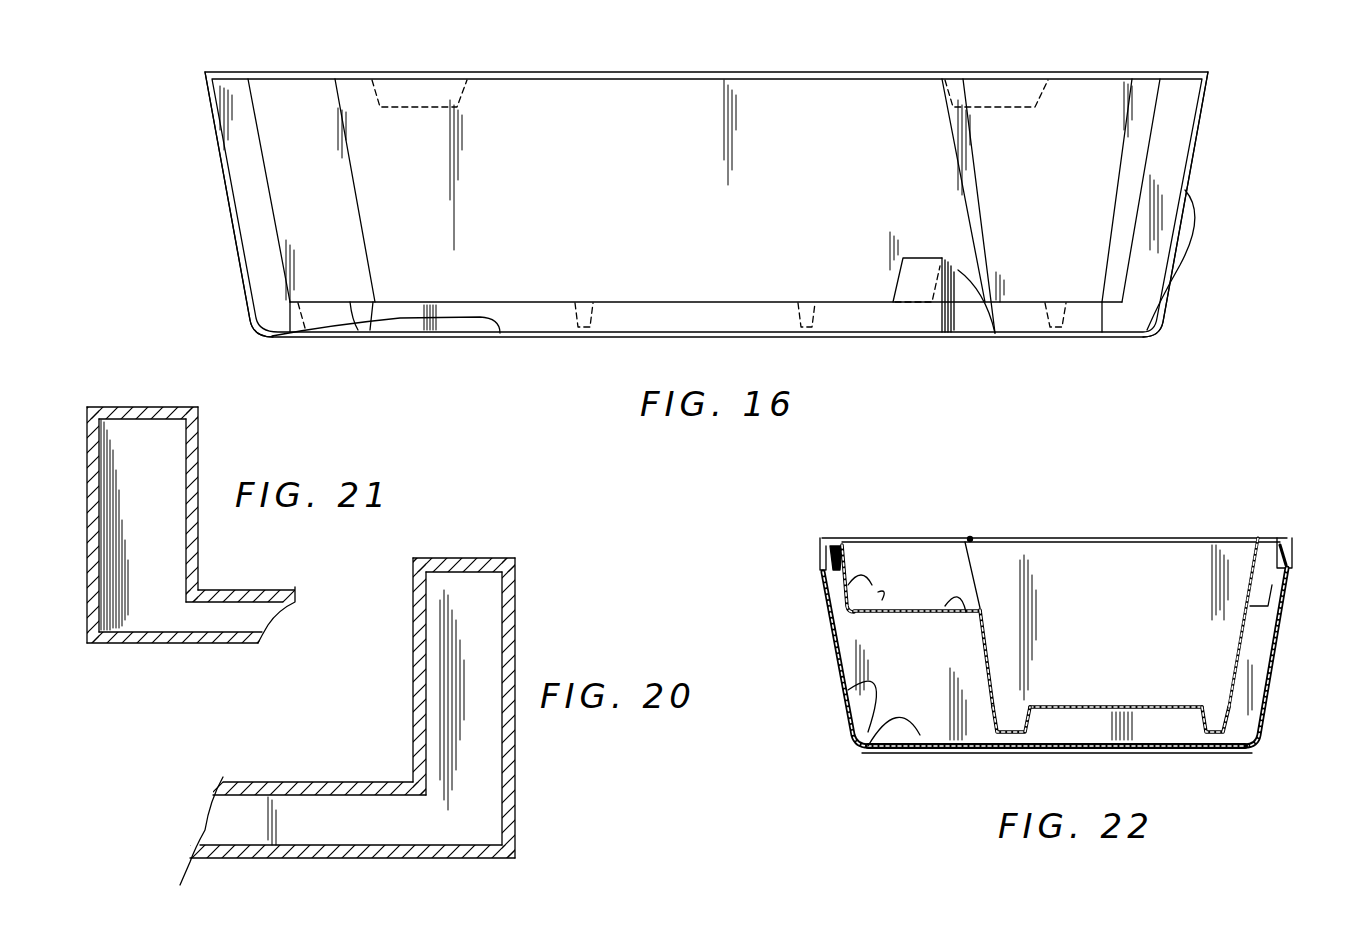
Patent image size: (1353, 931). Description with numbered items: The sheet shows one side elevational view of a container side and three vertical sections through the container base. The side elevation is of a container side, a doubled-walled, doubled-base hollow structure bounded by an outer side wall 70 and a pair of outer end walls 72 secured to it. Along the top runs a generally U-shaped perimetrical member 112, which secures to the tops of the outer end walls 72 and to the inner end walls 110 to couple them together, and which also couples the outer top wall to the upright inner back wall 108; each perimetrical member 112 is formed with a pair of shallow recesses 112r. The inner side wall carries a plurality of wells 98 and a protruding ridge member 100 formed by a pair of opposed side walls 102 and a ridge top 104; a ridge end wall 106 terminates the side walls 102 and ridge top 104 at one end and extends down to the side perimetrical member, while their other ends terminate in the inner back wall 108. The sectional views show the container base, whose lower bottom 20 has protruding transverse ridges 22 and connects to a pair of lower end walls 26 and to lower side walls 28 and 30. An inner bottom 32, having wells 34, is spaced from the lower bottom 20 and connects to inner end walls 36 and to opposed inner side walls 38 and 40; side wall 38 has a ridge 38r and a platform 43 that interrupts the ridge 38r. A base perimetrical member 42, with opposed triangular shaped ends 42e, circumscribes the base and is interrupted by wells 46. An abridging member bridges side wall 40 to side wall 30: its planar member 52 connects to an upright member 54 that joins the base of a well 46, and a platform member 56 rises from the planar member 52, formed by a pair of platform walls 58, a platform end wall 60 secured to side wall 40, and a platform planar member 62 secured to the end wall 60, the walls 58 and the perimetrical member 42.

In FIG. 21, the lower bottom 20 is at (160, 641).
In FIG. 20, the lower bottom 20 is at (362, 858).
In FIG. 22, the lower bottom 20 is at (870, 755).
In FIG. 22, the transverse ridges 22 is at (1082, 753).
In FIG. 21, the lower end walls 26 is at (90, 490).
In FIG. 20, the lower end walls 26 is at (497, 740).
In FIG. 22, the lower end walls 26 is at (868, 748).
In FIG. 22, the lower side wall 28 is at (1250, 748).
In FIG. 22, the lower side wall 30 is at (855, 738).
In FIG. 21, the inner bottom 32 is at (245, 597).
In FIG. 20, the inner bottom 32 is at (330, 782).
In FIG. 22, the inner bottom 32 is at (1125, 706).
In FIG. 22, the wells 34 is at (1030, 705).
In FIG. 21, the inner end walls 36 is at (190, 497).
In FIG. 20, the inner end walls 36 is at (413, 668).
In FIG. 22, the inner end walls 36 is at (1117, 560).
In FIG. 22, the inner side wall 38 is at (1237, 660).
In FIG. 22, the ridge 38r is at (1270, 575).
In FIG. 22, the inner side wall 40 is at (985, 625).
In FIG. 21, the base perimetrical member 42 is at (140, 407).
In FIG. 20, the base perimetrical member 42 is at (450, 558).
In FIG. 22, the base perimetrical member 42 is at (822, 538).
In FIG. 21, the triangular shaped ends 42e is at (112, 405).
In FIG. 20, the triangular shaped ends 42e is at (487, 558).
In FIG. 22, the platform 43 is at (1255, 538).
In FIG. 22, the wells 46 is at (838, 546).
In FIG. 22, the planar member 52 is at (962, 618).
In FIG. 22, the upright member 54 is at (860, 580).
In FIG. 22, the platform member 56 is at (970, 539).
In FIG. 22, the platform walls 58 is at (870, 618).
In FIG. 22, the platform end wall 60 is at (977, 570).
In FIG. 22, the platform planar member 62 is at (885, 540).
In FIG. 16, the outer side wall 70 is at (272, 337).
In FIG. 16, the outer end walls 72 is at (228, 193).
In FIG. 16, the wells 98 is at (598, 300).
In FIG. 16, the ridge member 100 is at (942, 256).
In FIG. 16, the ridge side walls 102 is at (893, 277).
In FIG. 16, the ridge top 104 is at (948, 257).
In FIG. 16, the ridge end wall 106 is at (995, 333).
In FIG. 16, the inner back wall 108 is at (346, 219).
In FIG. 16, the inner end walls 110 is at (272, 198).
In FIG. 16, the perimetrical member 112 is at (832, 75).
In FIG. 16, the shallow recesses 112r is at (475, 82).